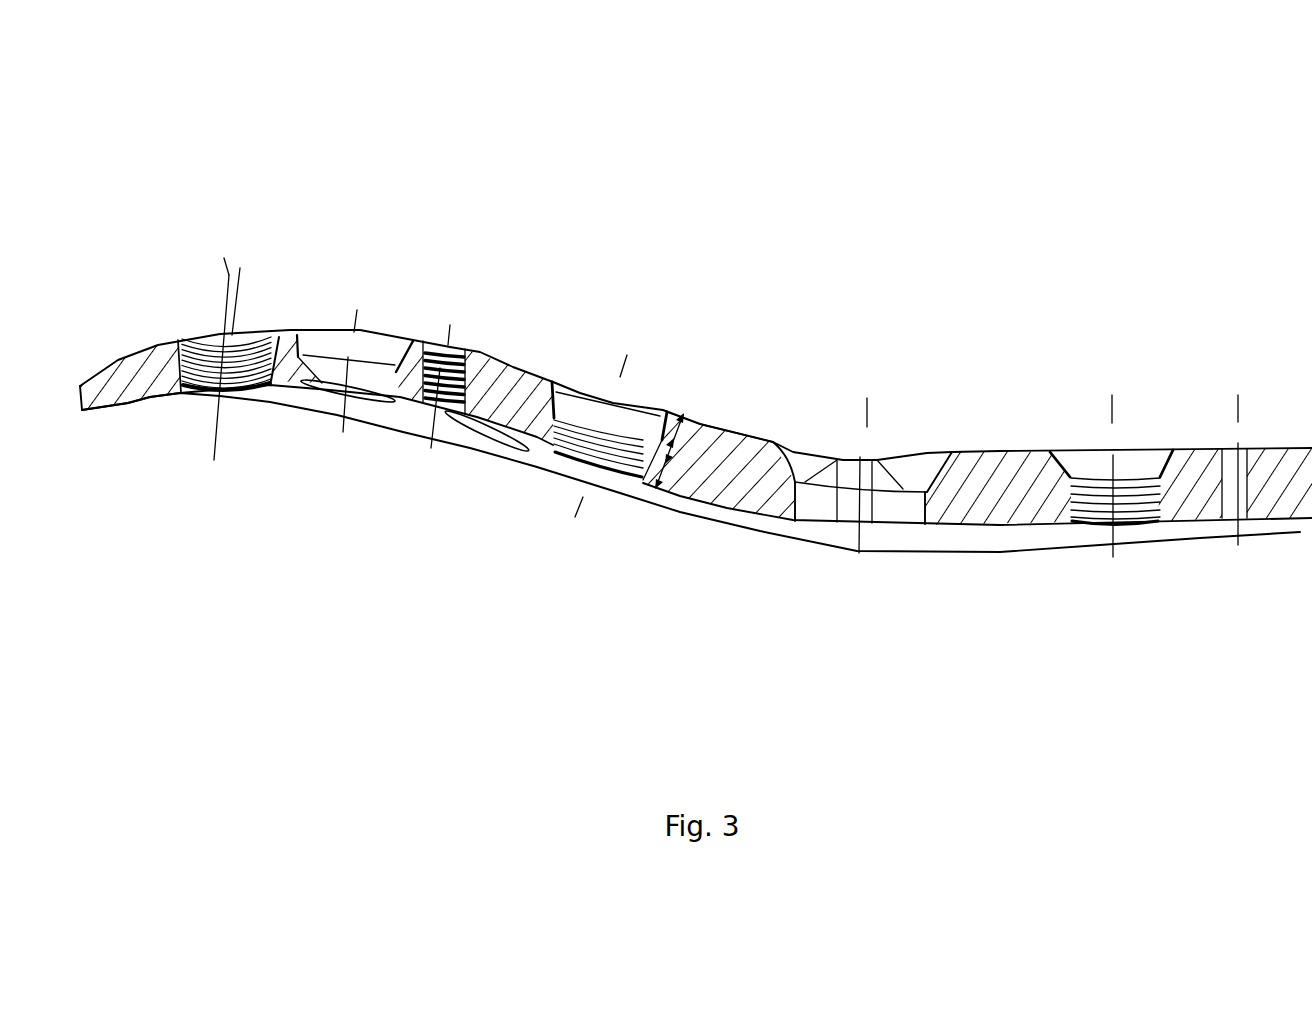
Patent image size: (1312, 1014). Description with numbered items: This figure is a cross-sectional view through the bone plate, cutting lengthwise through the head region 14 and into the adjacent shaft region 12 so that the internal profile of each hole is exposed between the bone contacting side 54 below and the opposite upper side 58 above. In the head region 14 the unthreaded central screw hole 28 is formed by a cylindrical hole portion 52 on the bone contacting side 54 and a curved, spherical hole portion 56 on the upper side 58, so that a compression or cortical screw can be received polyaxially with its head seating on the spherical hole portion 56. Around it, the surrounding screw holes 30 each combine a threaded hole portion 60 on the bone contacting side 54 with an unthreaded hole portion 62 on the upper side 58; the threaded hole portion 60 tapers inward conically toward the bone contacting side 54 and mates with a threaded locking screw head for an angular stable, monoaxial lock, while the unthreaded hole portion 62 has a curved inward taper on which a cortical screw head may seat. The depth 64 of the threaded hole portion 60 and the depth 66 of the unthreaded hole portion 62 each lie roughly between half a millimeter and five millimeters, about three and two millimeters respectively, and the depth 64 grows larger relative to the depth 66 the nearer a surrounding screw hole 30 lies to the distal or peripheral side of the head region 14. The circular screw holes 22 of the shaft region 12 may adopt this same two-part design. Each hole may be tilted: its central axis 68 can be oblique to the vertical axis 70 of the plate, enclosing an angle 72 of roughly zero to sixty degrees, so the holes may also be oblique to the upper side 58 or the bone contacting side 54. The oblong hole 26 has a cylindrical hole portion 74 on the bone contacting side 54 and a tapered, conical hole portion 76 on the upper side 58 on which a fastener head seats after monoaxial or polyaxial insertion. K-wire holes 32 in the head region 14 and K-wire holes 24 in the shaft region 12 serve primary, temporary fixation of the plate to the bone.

The shaft region 12 is at (1287, 447).
The head region 14 is at (483, 568).
The circular screw hole 22 is at (1133, 470).
The K-wire hole 24 is at (1237, 487).
The oblong hole 26 is at (927, 448).
The central screw hole 28 is at (396, 337).
The surrounding screw hole 30 is at (660, 412).
The K-wire hole 32 is at (461, 360).
The cylindrical hole portion 52 is at (305, 382).
The bone contacting side 54 is at (170, 393).
The spherical hole portion 56 is at (322, 334).
The upper side 58 is at (160, 342).
The threaded hole portion 60 is at (615, 392).
The unthreaded hole portion 62 is at (580, 400).
The depth of the threaded hole portion 64 is at (660, 490).
The depth of the unthreaded hole portion 66 is at (700, 437).
The central axis 68 is at (241, 268).
The vertical axis 70 is at (226, 278).
The angle 72 is at (228, 278).
The cylindrical hole portion 74 is at (903, 503).
The conical hole portion 76 is at (793, 437).